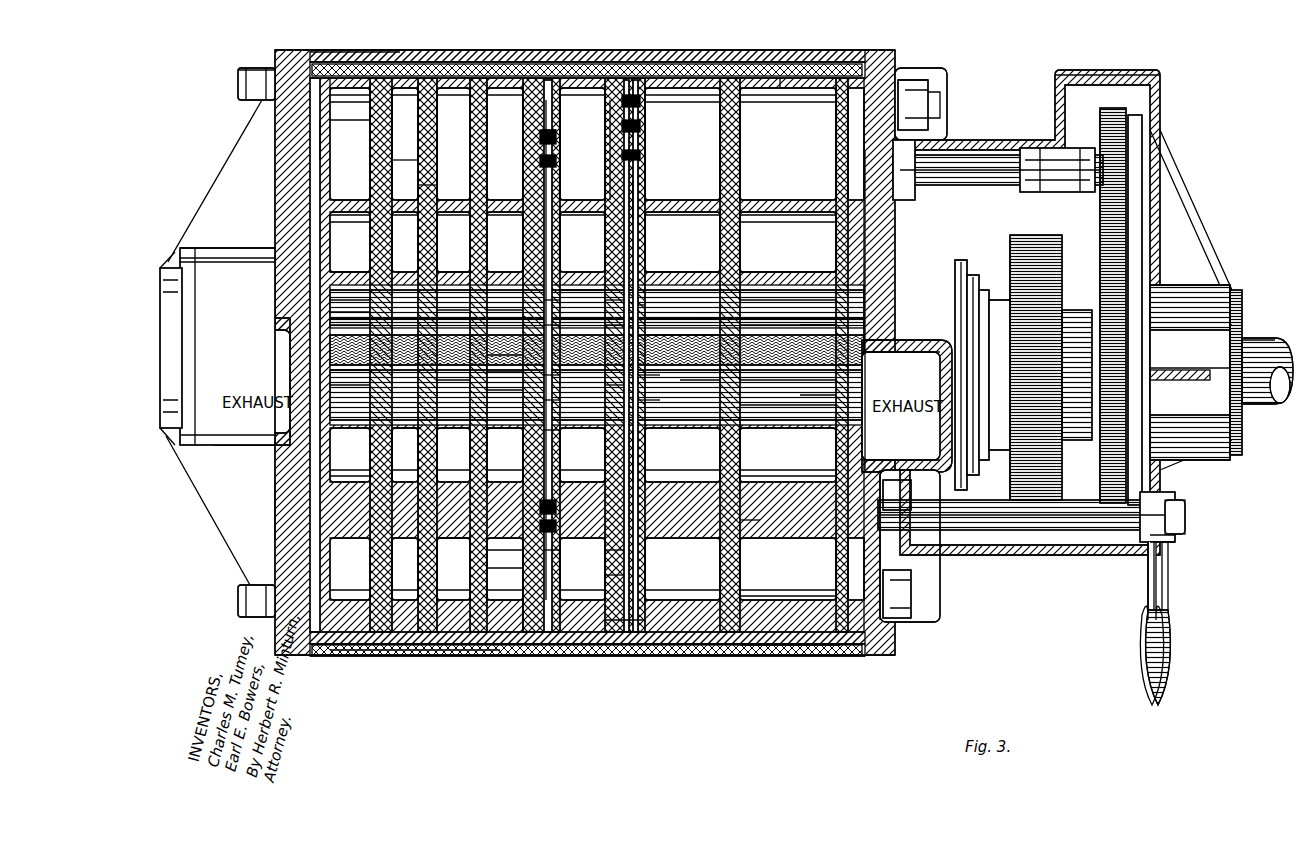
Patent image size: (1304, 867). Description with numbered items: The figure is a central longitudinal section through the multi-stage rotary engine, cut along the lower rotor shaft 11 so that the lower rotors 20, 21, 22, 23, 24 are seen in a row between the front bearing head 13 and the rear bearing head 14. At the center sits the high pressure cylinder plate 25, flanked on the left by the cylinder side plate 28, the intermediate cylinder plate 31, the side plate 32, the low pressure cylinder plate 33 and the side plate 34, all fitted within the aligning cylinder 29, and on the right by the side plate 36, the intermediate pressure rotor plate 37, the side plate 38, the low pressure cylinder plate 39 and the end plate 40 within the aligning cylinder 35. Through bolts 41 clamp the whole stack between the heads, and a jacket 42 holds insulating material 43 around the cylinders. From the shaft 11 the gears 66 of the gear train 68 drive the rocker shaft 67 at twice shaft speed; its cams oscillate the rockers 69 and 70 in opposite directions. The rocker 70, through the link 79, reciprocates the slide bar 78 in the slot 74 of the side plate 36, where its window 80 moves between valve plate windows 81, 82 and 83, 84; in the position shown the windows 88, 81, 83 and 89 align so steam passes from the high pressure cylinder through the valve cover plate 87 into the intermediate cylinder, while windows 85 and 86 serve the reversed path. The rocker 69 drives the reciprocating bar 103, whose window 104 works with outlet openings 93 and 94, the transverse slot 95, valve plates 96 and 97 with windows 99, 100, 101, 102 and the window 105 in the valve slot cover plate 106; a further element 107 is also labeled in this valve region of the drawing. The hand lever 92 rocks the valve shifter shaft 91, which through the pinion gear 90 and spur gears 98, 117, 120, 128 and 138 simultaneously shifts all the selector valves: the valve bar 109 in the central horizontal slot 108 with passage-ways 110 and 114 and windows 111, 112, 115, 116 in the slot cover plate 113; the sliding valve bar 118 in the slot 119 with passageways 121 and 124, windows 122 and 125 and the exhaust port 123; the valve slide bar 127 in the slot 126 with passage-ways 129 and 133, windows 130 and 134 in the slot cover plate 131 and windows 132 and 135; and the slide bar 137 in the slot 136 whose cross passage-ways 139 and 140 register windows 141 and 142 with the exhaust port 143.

The lower rotor shaft 11 is at (1265, 370).
The front bearing head 13 is at (245, 218).
The rear bearing head 14 is at (905, 72).
The rotor 20 is at (590, 290).
The rotor 21 is at (458, 290).
The rotor 22 is at (382, 290).
The rotor 23 is at (655, 290).
The rotor 24 is at (765, 290).
The high pressure cylinder plate 25 is at (580, 80).
The cylinder side plate 28 is at (548, 85).
The aligning cylinder 29 is at (352, 62).
The intermediate cylinder plate 31 is at (492, 80).
The side plate 32 is at (428, 133).
The low pressure cylinder plate 33 is at (388, 80).
The side plate 34 is at (336, 115).
The aligning cylinder 35 is at (752, 650).
The side plate 36 is at (622, 576).
The intermediate pressure rotor plate 37 is at (690, 90).
The side plate 38 is at (732, 136).
The low pressure cylinder plate 39 is at (796, 90).
The end plate 40 is at (836, 262).
The through bolts 41 is at (238, 82).
The jacket 42 is at (345, 57).
The insulating material 43 is at (380, 660).
The gears 66 is at (1035, 530).
The rocker shaft 67 is at (955, 170).
The gear train 68 is at (1125, 125).
The rocker 69 is at (530, 112).
The rocker 70 is at (648, 100).
The slot 74 is at (650, 95).
The slide bar 78 is at (638, 196).
The link 79 is at (546, 140).
The window 80 is at (690, 335).
The window 81 is at (620, 327).
The window 82 is at (605, 460).
The window 83 is at (642, 378).
The window 84 is at (636, 440).
The window 85 is at (642, 312).
The window 86 is at (620, 386).
The valve cover plate 87 is at (612, 640).
The window 88 is at (620, 302).
The opening 89 is at (642, 404).
The pinion gear 90 is at (622, 556).
The valve shifter shaft 91 is at (1080, 530).
The hand lever 92 is at (1148, 636).
The outlet opening 93 is at (550, 302).
The outlet opening 94 is at (544, 376).
The transverse slot 95 is at (516, 640).
The valve plate 96 is at (522, 568).
The valve plate 97 is at (545, 560).
The spur gear 98 is at (522, 552).
The window 99 is at (550, 327).
The window 100 is at (548, 430).
The window 101 is at (487, 358).
The window 102 is at (487, 390).
The reciprocating bar 103 is at (535, 262).
The window 104 is at (544, 400).
The window 105 is at (487, 374).
The valve slot cover plate 106 is at (515, 453).
The piston 107 is at (523, 315).
The central horizontal slot 108 is at (428, 85).
The valve bar 109 is at (427, 190).
The diagonal passage-way 110 is at (415, 332).
The window 111 is at (437, 315).
The window 112 is at (368, 370).
The slot cover plate 113 is at (428, 160).
The diagonal passageway 114 is at (418, 447).
The window 115 is at (437, 380).
The window 116 is at (365, 300).
The spur gear 117 is at (448, 520).
The sliding valve bar 118 is at (295, 385).
The slot 119 is at (322, 135).
The spur gear 120 is at (275, 510).
The passageway 121 is at (295, 360).
The window 122 is at (330, 318).
The exhaust port 123 is at (294, 345).
The passageway 124 is at (295, 432).
The window 125 is at (332, 385).
The slot 126 is at (738, 90).
The valve slide bar 127 is at (740, 458).
The spur gear 128 is at (735, 525).
The diagonal passage-way 129 is at (748, 330).
The window 130 is at (722, 320).
The slot cover plate 131 is at (708, 285).
The window 132 is at (745, 381).
The diagonal passage-way 133 is at (745, 405).
The window 134 is at (712, 380).
The window 135 is at (748, 308).
The slot 136 is at (955, 100).
The slide bar 137 is at (880, 225).
The spur gear 138 is at (878, 580).
The cross passage-way 139 is at (862, 356).
The cross passage-way 140 is at (862, 440).
The window 141 is at (836, 330).
The window 142 is at (836, 395).
The exhaust port 143 is at (862, 376).